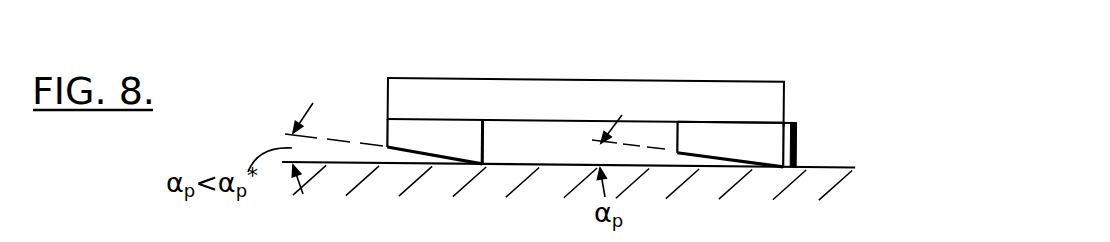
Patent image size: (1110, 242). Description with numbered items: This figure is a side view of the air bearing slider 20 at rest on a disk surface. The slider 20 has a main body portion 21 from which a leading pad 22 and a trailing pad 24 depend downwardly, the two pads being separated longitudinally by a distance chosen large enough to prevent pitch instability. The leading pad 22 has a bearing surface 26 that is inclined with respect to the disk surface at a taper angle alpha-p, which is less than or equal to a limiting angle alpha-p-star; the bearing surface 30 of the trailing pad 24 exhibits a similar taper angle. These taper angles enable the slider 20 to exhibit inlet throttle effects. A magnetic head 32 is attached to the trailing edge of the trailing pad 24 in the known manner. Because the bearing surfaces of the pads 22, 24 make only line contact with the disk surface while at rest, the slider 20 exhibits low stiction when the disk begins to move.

The air bearing slider 20 is at (589, 119).
The main body portion 21 is at (717, 92).
The leading pad 22 is at (397, 146).
The trailing pad 24 is at (772, 147).
The bearing surface 26 is at (412, 156).
The bearing surface 30 is at (691, 167).
The magnetic head 32 is at (797, 143).